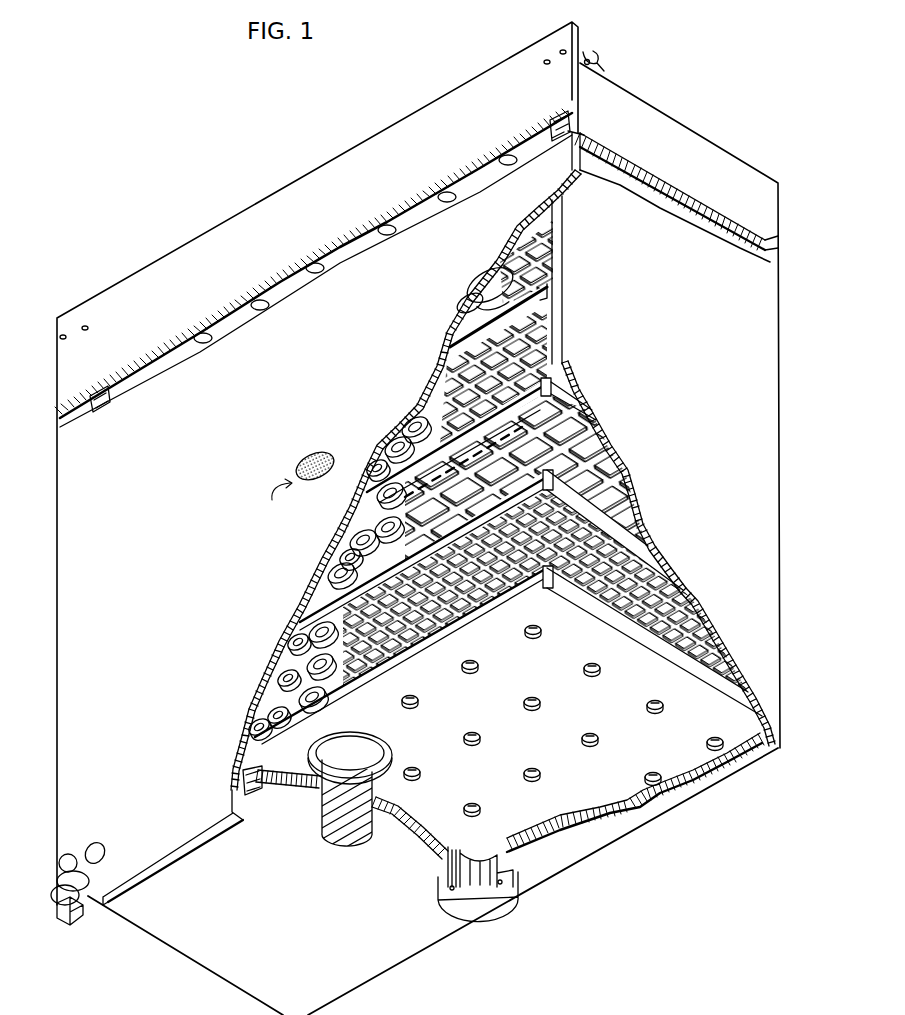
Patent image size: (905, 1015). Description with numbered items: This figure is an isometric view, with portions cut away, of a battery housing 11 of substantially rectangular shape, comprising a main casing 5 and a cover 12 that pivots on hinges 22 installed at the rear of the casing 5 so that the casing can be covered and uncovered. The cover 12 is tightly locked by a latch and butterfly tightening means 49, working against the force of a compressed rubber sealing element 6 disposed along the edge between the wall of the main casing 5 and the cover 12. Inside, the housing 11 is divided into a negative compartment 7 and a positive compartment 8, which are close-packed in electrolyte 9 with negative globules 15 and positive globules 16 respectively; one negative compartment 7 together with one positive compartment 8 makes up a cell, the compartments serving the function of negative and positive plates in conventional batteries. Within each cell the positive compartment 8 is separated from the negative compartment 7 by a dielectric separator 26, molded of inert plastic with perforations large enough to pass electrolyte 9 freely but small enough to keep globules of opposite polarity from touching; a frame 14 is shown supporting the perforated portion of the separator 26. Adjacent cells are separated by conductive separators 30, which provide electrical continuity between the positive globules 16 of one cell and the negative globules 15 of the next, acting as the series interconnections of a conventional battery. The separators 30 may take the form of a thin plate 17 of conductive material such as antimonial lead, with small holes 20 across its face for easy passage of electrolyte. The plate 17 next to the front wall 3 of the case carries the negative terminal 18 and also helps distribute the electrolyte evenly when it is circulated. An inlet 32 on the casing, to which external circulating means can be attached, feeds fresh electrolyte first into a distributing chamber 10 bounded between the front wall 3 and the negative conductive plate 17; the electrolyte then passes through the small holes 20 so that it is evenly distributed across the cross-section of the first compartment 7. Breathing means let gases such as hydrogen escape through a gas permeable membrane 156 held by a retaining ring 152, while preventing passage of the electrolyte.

The front wall 3 is at (303, 949).
The main casing 5 is at (694, 364).
The rubber sealing element 6 is at (575, 122).
The negative compartment 7 is at (548, 327).
The positive compartment 8 is at (540, 262).
The electrolyte 9 is at (455, 450).
The distributing chamber 10 is at (298, 787).
The battery housing 11 is at (714, 112).
The cover 12 is at (231, 654).
The frame 14 is at (531, 526).
The negative globules 15 is at (335, 620).
The positive globules 16 is at (333, 565).
The plate 17 is at (534, 737).
The negative terminal 18 is at (333, 840).
The small holes 20 is at (363, 227).
The hinges 22 is at (594, 58).
The dielectric separator 26 is at (437, 617).
The conductive separator 30 is at (540, 425).
The inlet 32 is at (505, 859).
The latch and butterfly tightening means 49 is at (97, 872).
The retaining ring 152 is at (313, 460).
The gas permeable membrane 156 is at (271, 486).